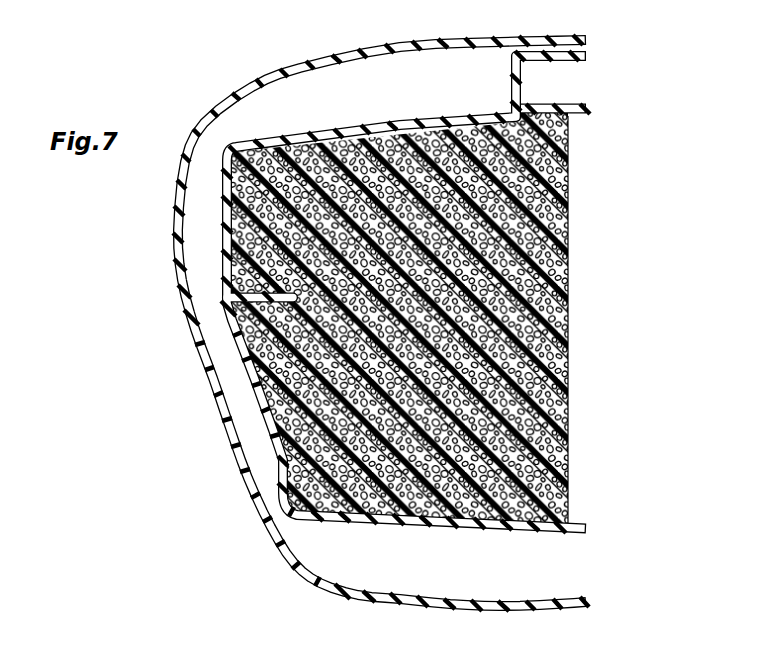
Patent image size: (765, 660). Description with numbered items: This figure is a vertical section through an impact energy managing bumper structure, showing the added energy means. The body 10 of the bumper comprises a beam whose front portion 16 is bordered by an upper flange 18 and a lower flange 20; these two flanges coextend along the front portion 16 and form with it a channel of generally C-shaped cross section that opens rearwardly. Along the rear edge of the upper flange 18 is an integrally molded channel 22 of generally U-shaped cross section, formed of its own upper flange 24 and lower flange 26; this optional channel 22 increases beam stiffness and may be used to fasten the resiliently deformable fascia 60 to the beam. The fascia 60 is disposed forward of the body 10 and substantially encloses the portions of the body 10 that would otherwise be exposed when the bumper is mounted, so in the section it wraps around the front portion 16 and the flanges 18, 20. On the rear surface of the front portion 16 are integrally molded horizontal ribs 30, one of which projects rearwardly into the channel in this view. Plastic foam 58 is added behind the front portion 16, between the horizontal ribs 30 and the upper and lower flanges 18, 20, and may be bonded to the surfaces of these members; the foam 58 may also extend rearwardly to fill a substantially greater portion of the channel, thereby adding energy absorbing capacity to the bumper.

The body 10 is at (399, 323).
The front portion 16 is at (223, 195).
The upper flange 18 is at (396, 121).
The lower flange 20 is at (480, 524).
The channel 22 is at (571, 83).
The upper flange 24 is at (572, 56).
The lower flange 26 is at (574, 104).
The horizontal ribs 30 is at (224, 288).
The plastic foam 58 is at (574, 195).
The fascia 60 is at (218, 112).